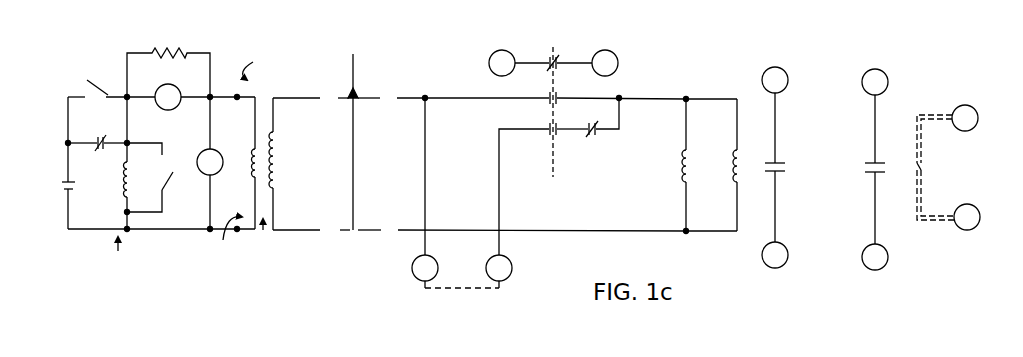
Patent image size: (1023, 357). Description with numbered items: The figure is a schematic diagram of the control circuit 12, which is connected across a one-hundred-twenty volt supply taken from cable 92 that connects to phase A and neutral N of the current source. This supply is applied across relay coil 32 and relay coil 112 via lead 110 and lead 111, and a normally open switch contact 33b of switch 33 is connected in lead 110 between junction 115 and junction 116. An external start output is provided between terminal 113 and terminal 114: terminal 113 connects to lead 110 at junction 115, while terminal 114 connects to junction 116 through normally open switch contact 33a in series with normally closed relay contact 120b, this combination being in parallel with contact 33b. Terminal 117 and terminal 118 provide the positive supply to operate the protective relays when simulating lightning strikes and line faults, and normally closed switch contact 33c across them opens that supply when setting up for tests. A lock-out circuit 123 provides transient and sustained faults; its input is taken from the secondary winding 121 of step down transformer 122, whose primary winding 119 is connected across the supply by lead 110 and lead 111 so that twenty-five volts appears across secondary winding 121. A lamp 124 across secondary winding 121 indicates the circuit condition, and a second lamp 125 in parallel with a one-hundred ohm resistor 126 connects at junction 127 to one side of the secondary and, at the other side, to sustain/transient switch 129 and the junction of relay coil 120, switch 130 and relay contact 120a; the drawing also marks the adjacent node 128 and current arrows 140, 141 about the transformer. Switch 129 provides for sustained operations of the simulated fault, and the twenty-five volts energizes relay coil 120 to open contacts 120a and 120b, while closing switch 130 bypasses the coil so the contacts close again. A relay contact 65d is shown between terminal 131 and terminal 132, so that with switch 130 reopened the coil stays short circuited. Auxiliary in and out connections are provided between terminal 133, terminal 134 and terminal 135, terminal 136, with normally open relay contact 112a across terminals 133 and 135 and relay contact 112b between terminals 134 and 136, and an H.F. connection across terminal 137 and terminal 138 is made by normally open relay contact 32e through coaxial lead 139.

The control circuit 12 is at (697, 47).
The relay coil 32 is at (688, 153).
The normally open relay contact 32e is at (925, 167).
The switch 33 is at (552, 150).
The normally open switch contact 33a is at (549, 126).
The normally open switch contact 33b is at (556, 92).
The normally closed switch contact 33c is at (553, 57).
The battery 65d is at (61, 185).
The cable 92 is at (355, 87).
The lead 110 is at (282, 94).
The lead 111 is at (315, 230).
The relay coil 112 is at (739, 151).
The normally open relay contact 112a is at (785, 163).
The normally open relay contact 112b is at (866, 171).
The terminal 113 is at (412, 268).
The terminal 114 is at (512, 268).
The junction 115 is at (426, 99).
The junction 116 is at (620, 100).
The terminal 117 is at (494, 52).
The terminal 118 is at (598, 52).
The primary winding 119 is at (278, 139).
The relay coil 120 is at (122, 189).
The relay contact 120a is at (100, 137).
The normally closed relay contact 120b is at (593, 135).
The secondary winding 121 is at (251, 172).
The step down transformer 122 is at (269, 235).
The lock-out circuit 123 is at (128, 253).
The lamp 124 is at (213, 152).
The second lamp 125 is at (182, 80).
The resistor 126 is at (162, 52).
The junction 127 is at (211, 94).
The junction 128 is at (131, 93).
The sustain/transient switch 129 is at (97, 86).
The switch 130 is at (171, 158).
The terminal 131 is at (67, 142).
The terminal 132 is at (125, 212).
The terminal 133 is at (788, 75).
The terminal 134 is at (886, 77).
The terminal 135 is at (788, 255).
The terminal 136 is at (886, 262).
The terminal 137 is at (975, 109).
The terminal 138 is at (977, 208).
The coaxial lead 139 is at (922, 115).
The current arrow 140 is at (263, 67).
The current arrow 141 is at (223, 237).